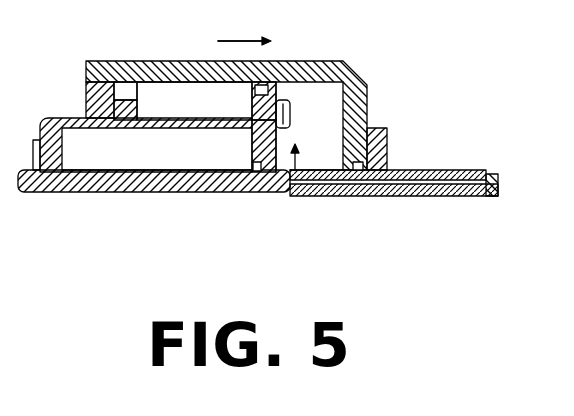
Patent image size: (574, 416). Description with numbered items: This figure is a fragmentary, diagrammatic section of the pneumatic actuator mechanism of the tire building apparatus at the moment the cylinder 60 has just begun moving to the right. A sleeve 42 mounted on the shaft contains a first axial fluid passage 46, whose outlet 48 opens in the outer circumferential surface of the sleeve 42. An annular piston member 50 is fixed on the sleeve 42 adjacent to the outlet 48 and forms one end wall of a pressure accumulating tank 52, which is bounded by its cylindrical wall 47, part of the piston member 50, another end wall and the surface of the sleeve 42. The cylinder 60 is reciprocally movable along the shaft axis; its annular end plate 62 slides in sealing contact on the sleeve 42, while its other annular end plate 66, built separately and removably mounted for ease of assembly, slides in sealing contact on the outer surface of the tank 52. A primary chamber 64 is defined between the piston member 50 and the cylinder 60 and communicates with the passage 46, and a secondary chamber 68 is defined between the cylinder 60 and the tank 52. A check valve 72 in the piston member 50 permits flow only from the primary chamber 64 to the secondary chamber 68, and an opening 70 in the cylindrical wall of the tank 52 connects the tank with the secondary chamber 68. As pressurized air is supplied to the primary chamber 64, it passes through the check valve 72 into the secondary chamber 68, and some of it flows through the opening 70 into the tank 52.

The sleeve 42 is at (177, 195).
The first axial fluid passage 46 is at (464, 172).
The cylindrical wall 47 is at (151, 122).
The outlet 48 is at (388, 143).
The annular piston member 50 is at (273, 140).
The pressure accumulating tank 52 is at (160, 160).
The cylinder 60 is at (351, 72).
The annular end plate 62 is at (297, 168).
The primary chamber 64 is at (327, 168).
The annular end plate 66 is at (84, 80).
The secondary chamber 68 is at (226, 112).
The opening 70 is at (237, 131).
The check valve 72 is at (284, 118).